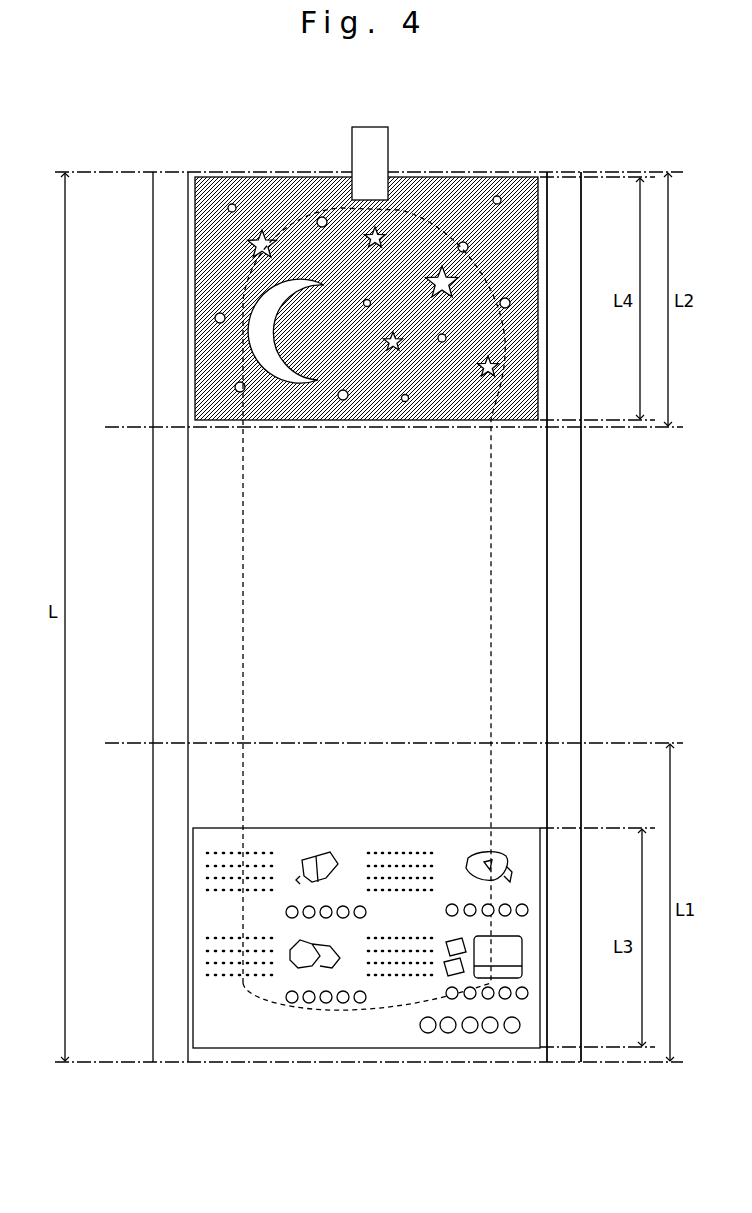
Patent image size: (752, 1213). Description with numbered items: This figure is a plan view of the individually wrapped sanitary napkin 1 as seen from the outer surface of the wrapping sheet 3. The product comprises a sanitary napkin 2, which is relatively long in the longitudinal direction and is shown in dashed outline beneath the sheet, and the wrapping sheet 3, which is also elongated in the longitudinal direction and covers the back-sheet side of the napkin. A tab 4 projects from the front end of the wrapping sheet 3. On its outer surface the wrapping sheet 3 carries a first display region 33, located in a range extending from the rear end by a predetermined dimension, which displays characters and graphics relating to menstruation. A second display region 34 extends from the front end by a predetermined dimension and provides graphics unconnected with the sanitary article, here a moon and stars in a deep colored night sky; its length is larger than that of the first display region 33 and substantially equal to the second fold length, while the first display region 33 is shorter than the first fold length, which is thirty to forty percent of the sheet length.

The individually wrapped sanitary napkin 1 is at (140, 142).
The sanitary napkin 2 is at (268, 628).
The wrapping sheet 3 is at (567, 578).
The tab 4 is at (377, 136).
The first display region 33 is at (203, 923).
The second display region 34 is at (470, 196).